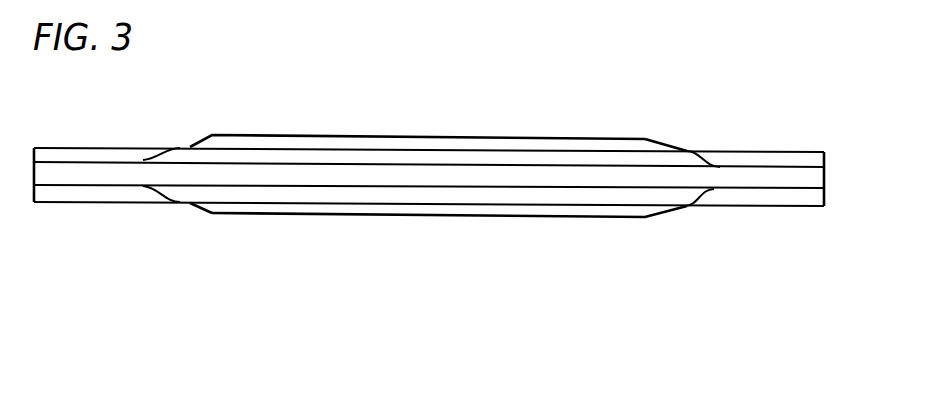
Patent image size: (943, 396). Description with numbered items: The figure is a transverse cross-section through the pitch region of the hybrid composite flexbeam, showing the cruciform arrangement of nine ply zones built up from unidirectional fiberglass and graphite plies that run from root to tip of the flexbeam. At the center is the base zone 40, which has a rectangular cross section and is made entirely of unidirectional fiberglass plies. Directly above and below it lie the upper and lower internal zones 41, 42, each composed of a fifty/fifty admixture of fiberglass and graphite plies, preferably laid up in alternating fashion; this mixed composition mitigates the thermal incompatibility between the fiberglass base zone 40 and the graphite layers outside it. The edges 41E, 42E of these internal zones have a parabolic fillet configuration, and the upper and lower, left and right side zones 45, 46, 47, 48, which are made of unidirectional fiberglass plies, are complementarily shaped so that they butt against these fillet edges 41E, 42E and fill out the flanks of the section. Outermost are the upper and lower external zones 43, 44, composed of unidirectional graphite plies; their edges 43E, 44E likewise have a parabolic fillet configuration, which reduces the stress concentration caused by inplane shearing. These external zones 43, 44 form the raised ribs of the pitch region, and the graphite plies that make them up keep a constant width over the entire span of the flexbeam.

The base zone 40 is at (388, 177).
The upper internal zone 41 is at (313, 157).
The lower internal zone 42 is at (310, 194).
The upper external zone 43 is at (480, 145).
The lower external zone 44 is at (492, 210).
The upper left side zone 45 is at (65, 155).
The lower left side zone 46 is at (65, 197).
The upper right side zone 47 is at (747, 158).
The lower right side zone 48 is at (765, 198).
The edge of upper internal zone 41E is at (703, 152).
The edge of lower internal zone 42E is at (703, 198).
The edge of upper external zone 43E is at (652, 143).
The edge of lower external zone 44E is at (200, 207).